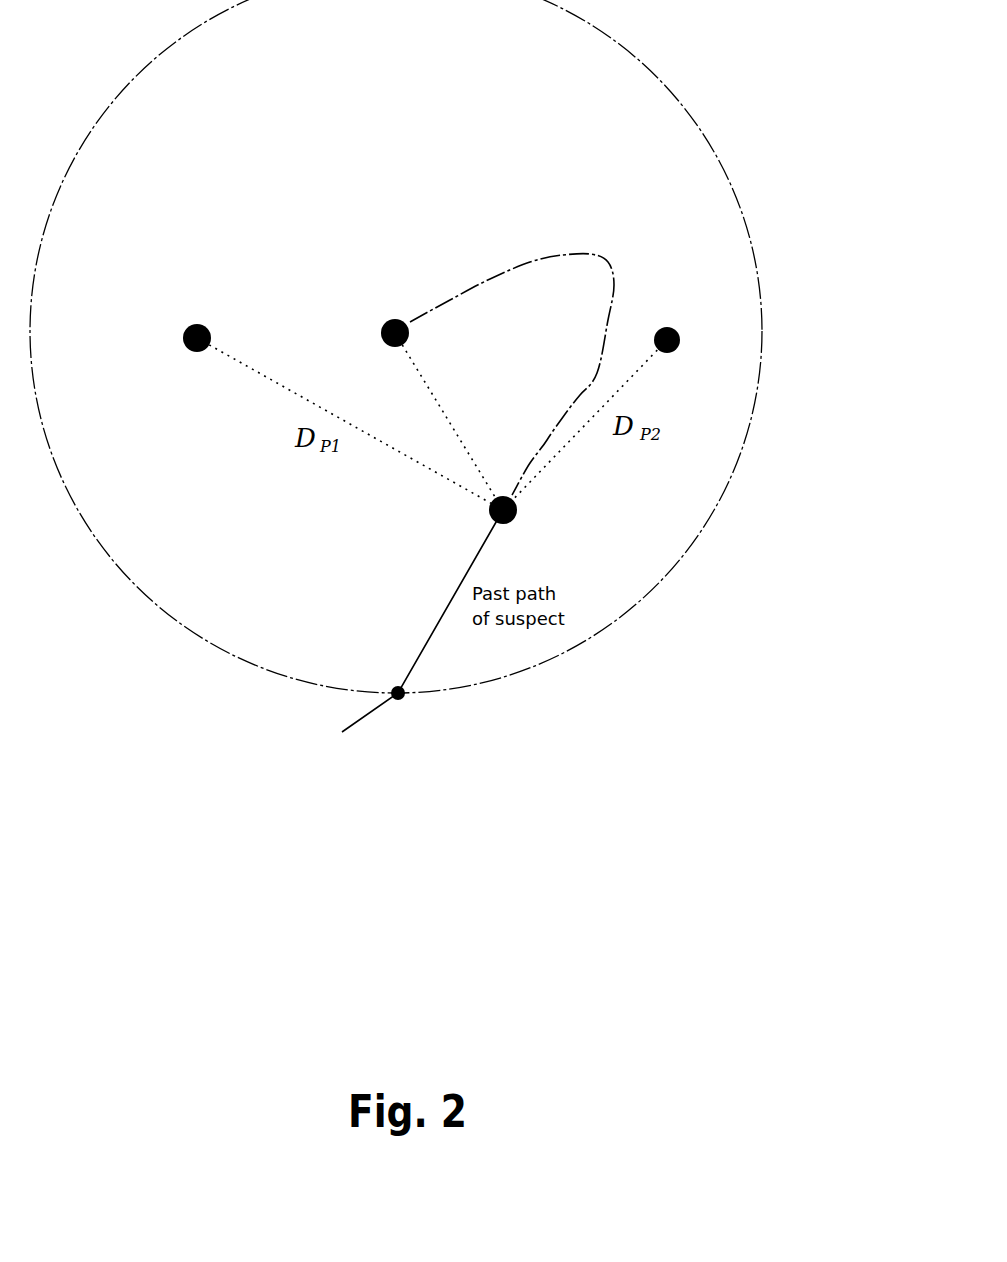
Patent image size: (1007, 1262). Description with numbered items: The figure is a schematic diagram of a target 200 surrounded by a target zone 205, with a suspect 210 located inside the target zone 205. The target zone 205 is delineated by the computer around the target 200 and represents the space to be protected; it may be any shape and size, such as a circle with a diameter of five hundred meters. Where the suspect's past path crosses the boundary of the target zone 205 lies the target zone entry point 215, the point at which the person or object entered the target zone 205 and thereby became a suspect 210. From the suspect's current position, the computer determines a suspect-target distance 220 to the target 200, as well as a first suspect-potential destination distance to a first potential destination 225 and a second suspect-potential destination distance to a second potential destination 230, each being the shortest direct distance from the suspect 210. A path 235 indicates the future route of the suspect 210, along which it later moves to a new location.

The target 200 is at (382, 328).
The target zone 205 is at (672, 92).
The suspect 210 is at (490, 518).
The target zone entry point 215 is at (295, 740).
The suspect-target distance 220 is at (440, 390).
The first potential destination 225 is at (184, 327).
The second potential destination 230 is at (679, 348).
The path 235 is at (578, 250).